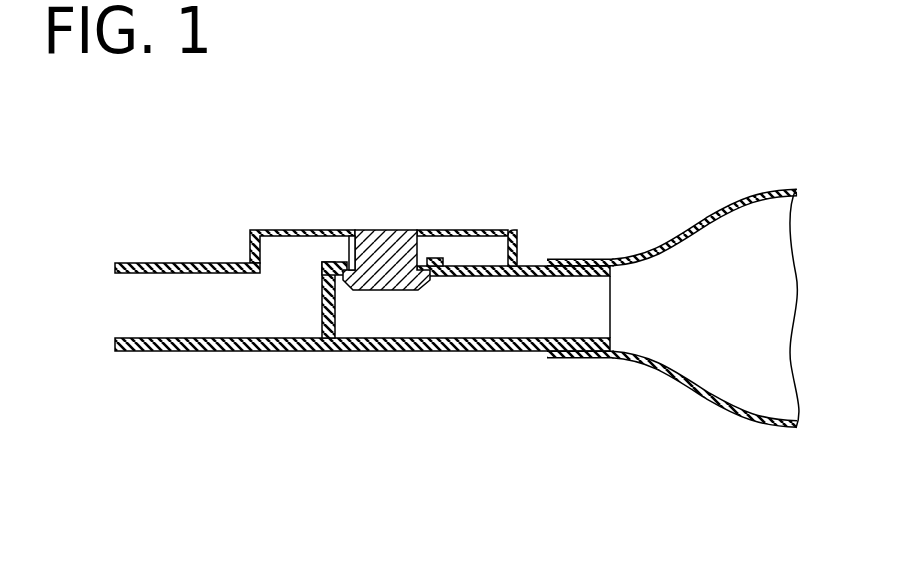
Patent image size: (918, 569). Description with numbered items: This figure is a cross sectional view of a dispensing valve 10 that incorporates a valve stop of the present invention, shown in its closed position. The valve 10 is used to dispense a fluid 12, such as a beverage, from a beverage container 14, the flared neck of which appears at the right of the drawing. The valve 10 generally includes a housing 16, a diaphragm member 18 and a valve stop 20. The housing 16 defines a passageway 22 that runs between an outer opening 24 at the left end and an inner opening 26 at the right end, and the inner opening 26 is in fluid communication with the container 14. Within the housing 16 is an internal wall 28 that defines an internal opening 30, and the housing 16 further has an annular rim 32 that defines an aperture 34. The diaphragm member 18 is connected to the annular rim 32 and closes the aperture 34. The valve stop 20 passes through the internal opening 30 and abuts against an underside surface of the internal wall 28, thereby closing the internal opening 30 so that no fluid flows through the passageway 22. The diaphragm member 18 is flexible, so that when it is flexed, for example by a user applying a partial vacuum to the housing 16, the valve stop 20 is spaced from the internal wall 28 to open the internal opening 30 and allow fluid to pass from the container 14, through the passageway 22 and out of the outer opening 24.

The dispensing valve 10 is at (437, 157).
The fluid 12 is at (767, 377).
The beverage container 14 is at (630, 257).
The housing 16 is at (137, 263).
The diaphragm member 18 is at (420, 232).
The valve stop 20 is at (375, 235).
The passageway 22 is at (303, 328).
The outer opening 24 is at (125, 308).
The inner opening 26 is at (598, 315).
The internal wall 28 is at (453, 267).
The internal opening 30 is at (349, 258).
The annular rim 32 is at (517, 250).
The aperture 34 is at (280, 232).